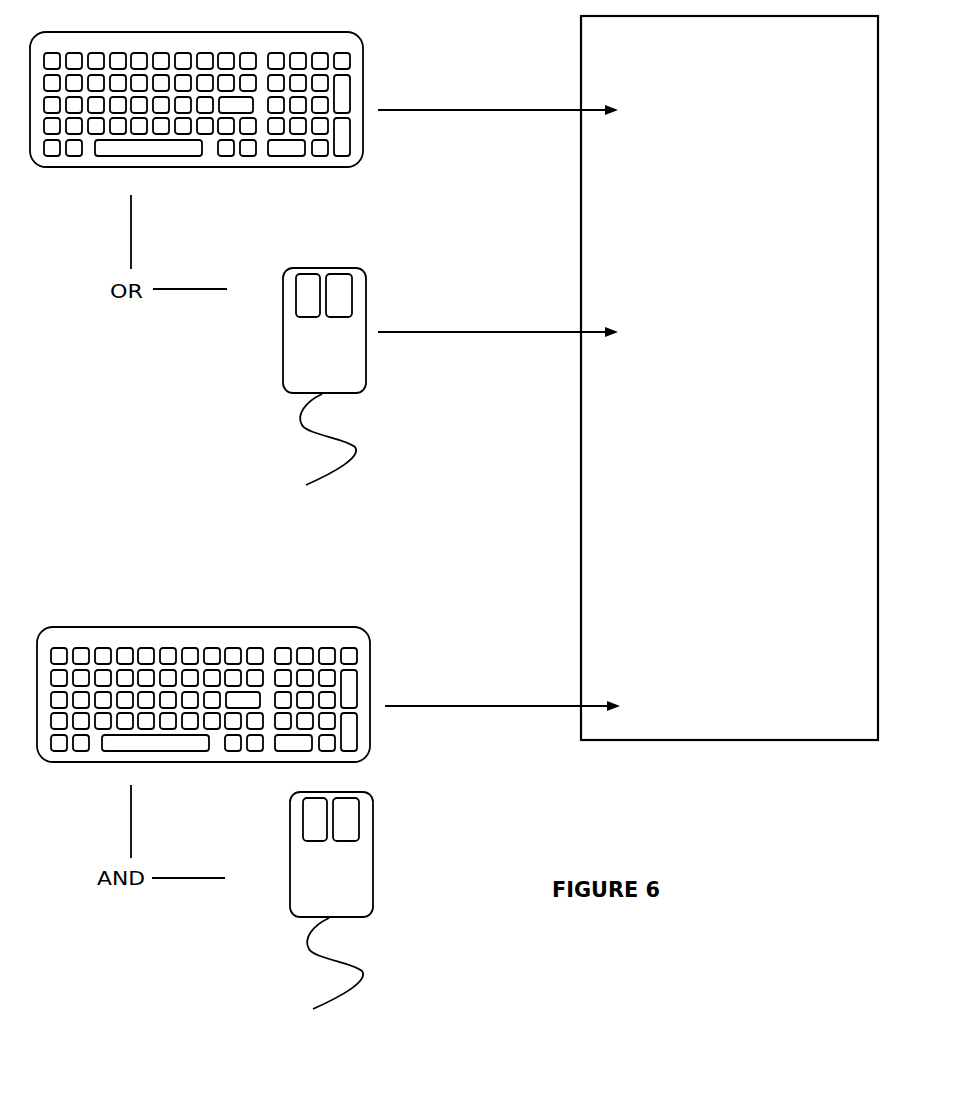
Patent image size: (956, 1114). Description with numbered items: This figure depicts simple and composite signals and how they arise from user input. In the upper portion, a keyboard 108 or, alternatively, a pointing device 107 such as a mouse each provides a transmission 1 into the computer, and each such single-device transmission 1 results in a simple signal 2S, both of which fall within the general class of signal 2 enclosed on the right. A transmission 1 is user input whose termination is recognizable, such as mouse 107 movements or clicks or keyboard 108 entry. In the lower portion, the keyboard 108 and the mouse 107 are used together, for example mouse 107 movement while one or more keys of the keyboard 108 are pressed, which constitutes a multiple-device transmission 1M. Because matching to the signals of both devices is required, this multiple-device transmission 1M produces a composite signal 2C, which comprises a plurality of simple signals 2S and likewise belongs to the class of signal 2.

The keyboard 108 is at (200, 381).
The pointing device 107 is at (332, 635).
The transmission 1 is at (498, 204).
The multiple-device transmission 1M is at (502, 689).
The signal 2 is at (729, 378).
The simple signal 2S is at (720, 223).
The composite signal 2C is at (740, 707).